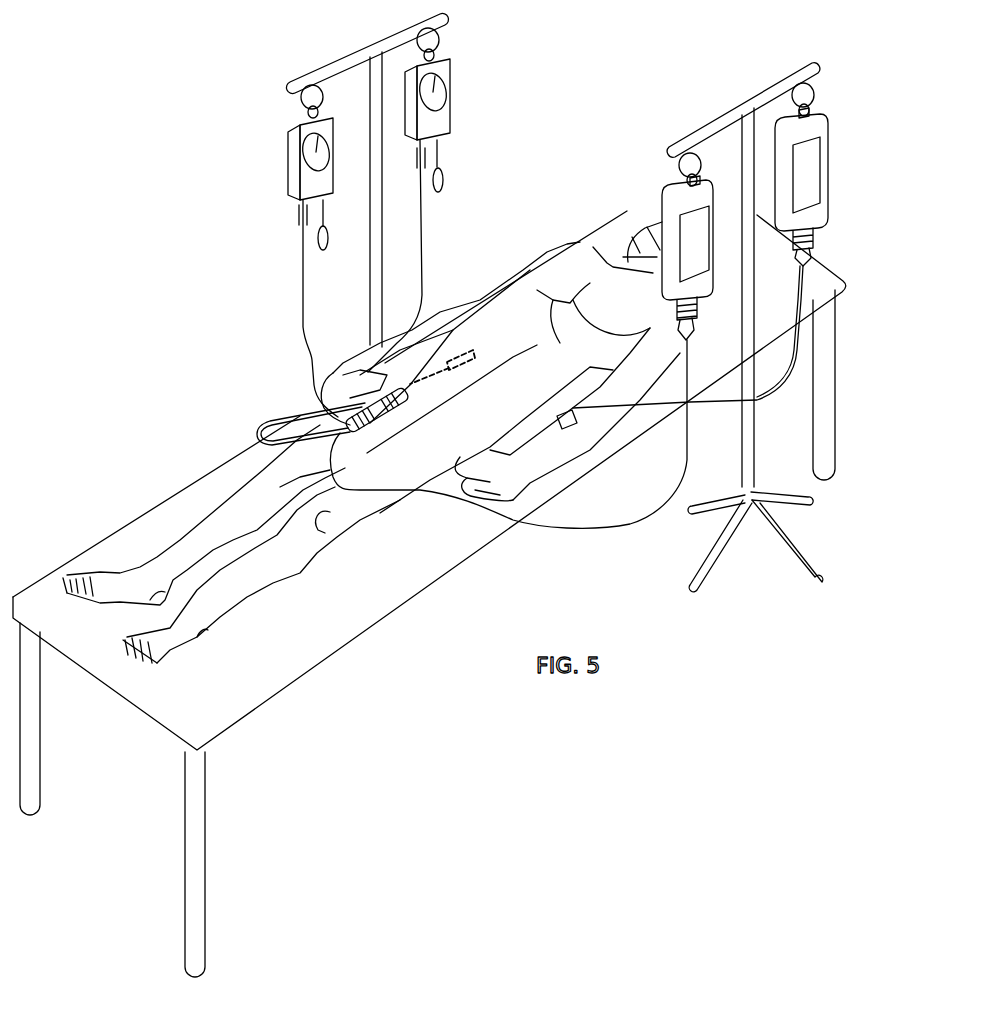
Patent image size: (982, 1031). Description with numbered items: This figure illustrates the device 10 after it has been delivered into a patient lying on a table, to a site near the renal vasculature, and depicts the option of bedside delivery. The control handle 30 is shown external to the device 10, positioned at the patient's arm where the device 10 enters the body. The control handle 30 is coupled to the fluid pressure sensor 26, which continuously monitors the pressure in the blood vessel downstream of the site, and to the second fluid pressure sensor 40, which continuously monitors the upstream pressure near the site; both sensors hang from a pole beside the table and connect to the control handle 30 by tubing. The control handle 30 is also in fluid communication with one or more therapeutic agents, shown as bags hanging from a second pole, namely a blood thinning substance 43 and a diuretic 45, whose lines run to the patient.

The device 10 is at (462, 350).
The fluid pressure sensor 26 is at (305, 177).
The control handle 30 is at (337, 417).
The second fluid pressure sensor 40 is at (442, 107).
The blood thinning substance 43 is at (678, 207).
The diuretic 45 is at (815, 167).